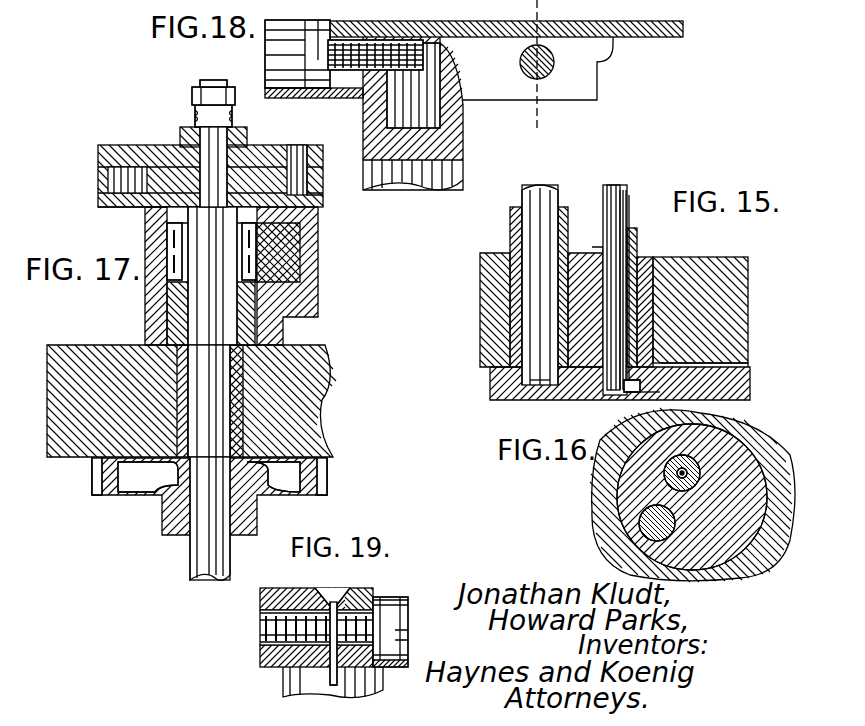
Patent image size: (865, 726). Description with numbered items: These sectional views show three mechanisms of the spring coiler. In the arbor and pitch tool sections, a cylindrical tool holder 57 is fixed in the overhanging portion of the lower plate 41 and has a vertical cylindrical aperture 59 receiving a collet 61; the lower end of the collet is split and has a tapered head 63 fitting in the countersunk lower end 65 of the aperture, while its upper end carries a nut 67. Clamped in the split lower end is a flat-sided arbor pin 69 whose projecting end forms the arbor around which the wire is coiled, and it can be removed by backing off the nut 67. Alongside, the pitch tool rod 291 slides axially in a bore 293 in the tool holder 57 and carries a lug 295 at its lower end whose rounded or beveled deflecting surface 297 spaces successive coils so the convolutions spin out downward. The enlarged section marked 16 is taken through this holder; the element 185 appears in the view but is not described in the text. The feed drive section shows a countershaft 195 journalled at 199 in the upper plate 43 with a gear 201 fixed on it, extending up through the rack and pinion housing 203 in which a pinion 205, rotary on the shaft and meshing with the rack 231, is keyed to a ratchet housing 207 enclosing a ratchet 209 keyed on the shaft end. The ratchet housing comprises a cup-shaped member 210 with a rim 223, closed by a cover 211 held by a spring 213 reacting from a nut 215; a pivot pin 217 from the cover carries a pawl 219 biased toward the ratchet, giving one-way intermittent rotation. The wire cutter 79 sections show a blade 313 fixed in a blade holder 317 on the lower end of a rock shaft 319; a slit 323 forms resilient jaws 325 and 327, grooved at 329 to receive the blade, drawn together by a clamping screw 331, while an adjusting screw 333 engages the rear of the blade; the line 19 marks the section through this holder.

In FIG. 17, the cover 211 is at (99, 152).
In FIG. 17, the rim 223 is at (108, 176).
In FIG. 17, the pivot pin 217 is at (297, 152).
In FIG. 17, the pawl 219 is at (312, 182).
In FIG. 17, the ratchet 209 is at (156, 150).
In FIG. 17, the ratchet housing 207 is at (96, 193).
In FIG. 17, the cup-shaped member 210 is at (134, 200).
In FIG. 17, the rack and pinion housing 203 is at (308, 316).
In FIG. 17, the rack 231 is at (285, 262).
In FIG. 17, the pinion 205 is at (168, 250).
In FIG. 17, the journal 199 is at (168, 362).
In FIG. 17, the upper plate 43 is at (318, 408).
In FIG. 17, the gear 201 is at (93, 490).
In FIG. 17, the countershaft 195 is at (198, 557).
In FIG. 17, the spring 213 is at (196, 115).
In FIG. 17, the nut 215 is at (195, 96).
In FIG. 18, the blade 313 is at (683, 29).
In FIG. 19, the blade 313 is at (340, 588).
In FIG. 18, the rock shaft 319 is at (455, 145).
In FIG. 19, the rock shaft 319 is at (375, 684).
In FIG. 18, the adjusting screw 333 is at (318, 36).
In FIG. 18, the clamping screw 331 is at (554, 60).
In FIG. 19, the clamping screw 331 is at (266, 624).
In FIG. 18, the slit 323 is at (597, 76).
In FIG. 19, the slit 323 is at (330, 676).
In FIG. 18, the section line 19- 19 is at (508, 122).
In FIG. 15, the wire cutter 79 is at (491, 382).
In FIG. 15, the lug 295 is at (598, 390).
In FIG. 15, the deflecting surface 297 is at (612, 395).
In FIG. 15, the rod 291 is at (608, 202).
In FIG. 16, the rod 291 is at (676, 524).
In FIG. 15, the arbor pin 69 is at (624, 200).
In FIG. 16, the arbor pin 69 is at (686, 474).
In FIG. 15, the collet 61 is at (631, 218).
In FIG. 16, the collet 61 is at (668, 472).
In FIG. 15, the nut 67 is at (638, 236).
In FIG. 15, the tool holder 57 is at (660, 255).
In FIG. 16, the tool holder 57 is at (615, 488).
In FIG. 15, the base plate 185 is at (745, 384).
In FIG. 15, the tapered head 63 is at (632, 393).
In FIG. 15, the countersunk lower end 65 is at (652, 392).
In FIG. 15, the section line 16- 16 is at (688, 350).
In FIG. 16, the lower plate 41 is at (601, 525).
In FIG. 16, the aperture 59 is at (680, 468).
In FIG. 16, the bore 293 is at (660, 541).
In FIG. 19, the blade holder 317 is at (262, 597).
In FIG. 19, the clamping jaw 327 is at (262, 655).
In FIG. 19, the groove 329 is at (320, 592).
In FIG. 19, the clamping jaw 325 is at (383, 594).